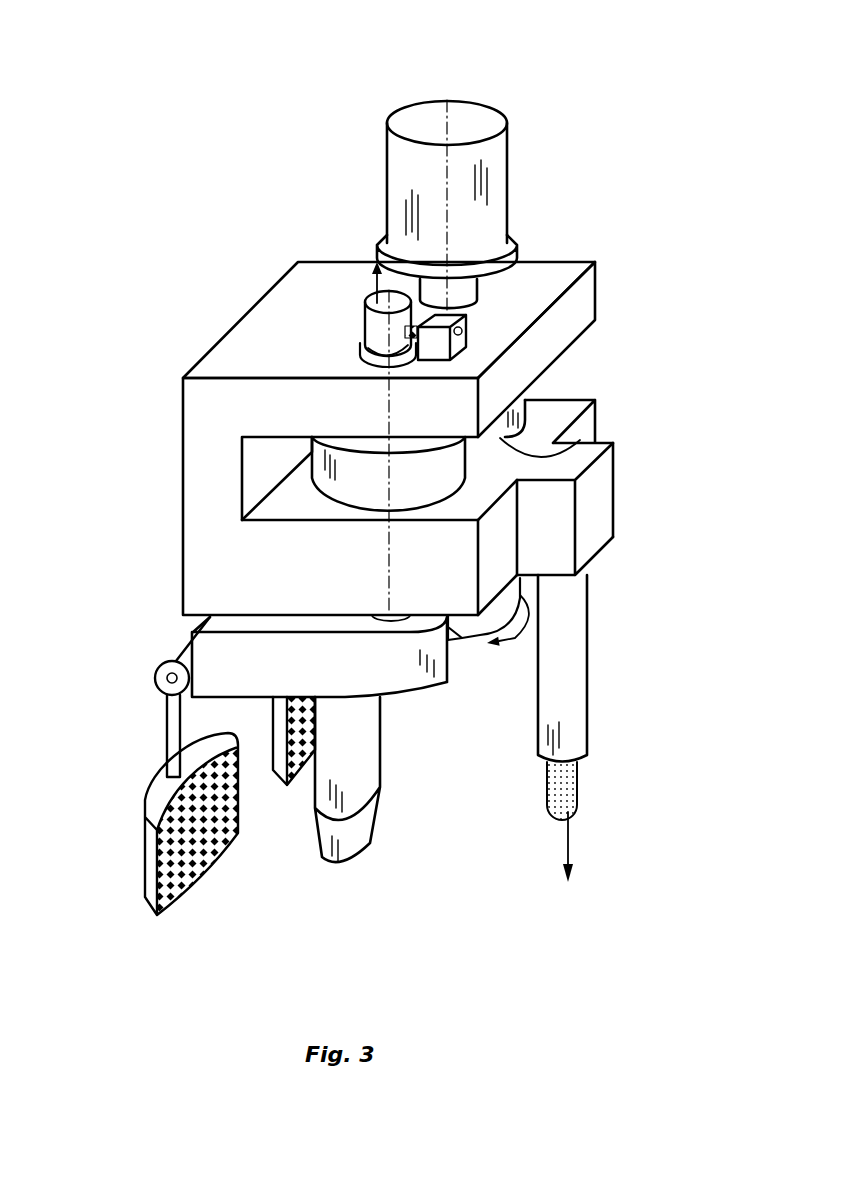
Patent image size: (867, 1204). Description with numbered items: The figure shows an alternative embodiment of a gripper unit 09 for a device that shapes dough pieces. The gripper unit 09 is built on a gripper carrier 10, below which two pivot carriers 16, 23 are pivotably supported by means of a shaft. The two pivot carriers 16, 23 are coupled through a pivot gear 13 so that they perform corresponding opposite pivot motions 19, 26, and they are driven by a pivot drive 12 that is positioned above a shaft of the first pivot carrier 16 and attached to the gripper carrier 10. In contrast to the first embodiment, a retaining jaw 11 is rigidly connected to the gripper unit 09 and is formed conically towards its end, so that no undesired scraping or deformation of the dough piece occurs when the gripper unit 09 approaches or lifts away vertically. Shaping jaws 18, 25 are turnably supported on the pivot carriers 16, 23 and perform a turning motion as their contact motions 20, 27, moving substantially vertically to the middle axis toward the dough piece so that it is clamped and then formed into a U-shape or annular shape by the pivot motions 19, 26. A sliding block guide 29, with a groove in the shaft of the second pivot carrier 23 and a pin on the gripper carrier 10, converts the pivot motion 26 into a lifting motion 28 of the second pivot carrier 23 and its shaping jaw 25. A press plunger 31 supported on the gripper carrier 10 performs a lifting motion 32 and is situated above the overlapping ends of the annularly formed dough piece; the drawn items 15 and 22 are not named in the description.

The gripper unit 09 is at (148, 55).
The gripper carrier 10 is at (245, 560).
The retaining jaw 11 is at (355, 840).
The pivot drive 12 is at (428, 180).
The pivot gear 13 is at (555, 443).
The switch block 15 is at (499, 297).
The pivot carrier 16 is at (483, 647).
The shaping jaw 18 is at (300, 757).
The pivot motion 19 is at (470, 628).
The contact motion 20 is at (270, 722).
The collar clamp 22 is at (341, 345).
The second pivot carrier 23 is at (225, 660).
The shaping jaw 25 is at (148, 841).
The pivot motion 26 is at (462, 650).
The contact motion 27 is at (163, 735).
The lifting motion 28 is at (374, 292).
The sliding block guide 29 is at (365, 302).
The press plunger 31 is at (562, 782).
The lifting motion 32 is at (570, 853).